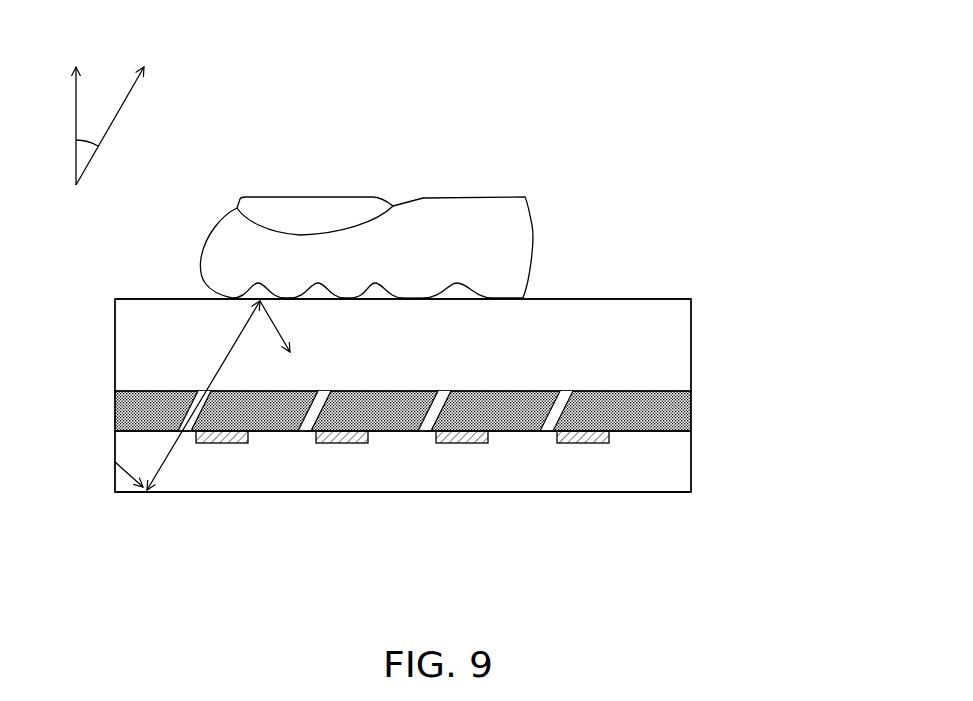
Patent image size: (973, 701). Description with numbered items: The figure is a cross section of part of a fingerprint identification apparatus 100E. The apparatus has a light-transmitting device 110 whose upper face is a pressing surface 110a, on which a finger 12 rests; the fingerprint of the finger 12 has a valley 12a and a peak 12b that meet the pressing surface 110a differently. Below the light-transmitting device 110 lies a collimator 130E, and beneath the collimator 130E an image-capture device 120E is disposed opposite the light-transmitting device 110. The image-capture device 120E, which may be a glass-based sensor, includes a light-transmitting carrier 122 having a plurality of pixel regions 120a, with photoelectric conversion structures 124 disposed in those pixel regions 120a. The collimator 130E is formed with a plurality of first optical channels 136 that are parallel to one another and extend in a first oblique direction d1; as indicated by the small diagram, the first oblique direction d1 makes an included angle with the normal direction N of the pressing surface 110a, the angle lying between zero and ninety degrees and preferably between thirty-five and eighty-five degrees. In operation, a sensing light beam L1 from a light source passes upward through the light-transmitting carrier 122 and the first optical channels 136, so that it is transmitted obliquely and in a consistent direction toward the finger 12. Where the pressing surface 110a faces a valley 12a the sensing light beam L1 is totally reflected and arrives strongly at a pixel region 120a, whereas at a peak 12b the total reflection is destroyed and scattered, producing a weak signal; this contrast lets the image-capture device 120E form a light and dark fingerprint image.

The finger 12 is at (408, 166).
The valley 12a is at (255, 290).
The peak 12b is at (412, 302).
The fingerprint identification apparatus 100E is at (917, 603).
The light-transmitting device 110 is at (703, 300).
The pressing surface 110a is at (673, 297).
The collimator 130E is at (703, 392).
The first optical channels 136 is at (186, 410).
The image-capture device 120E is at (703, 432).
The pixel regions 120a is at (343, 445).
The photoelectric conversion structures 124 is at (355, 444).
The light-transmitting carrier 122 is at (655, 477).
The sensing light beam L1 is at (122, 476).
The normal direction N is at (72, 107).
The first oblique direction d1 is at (128, 99).